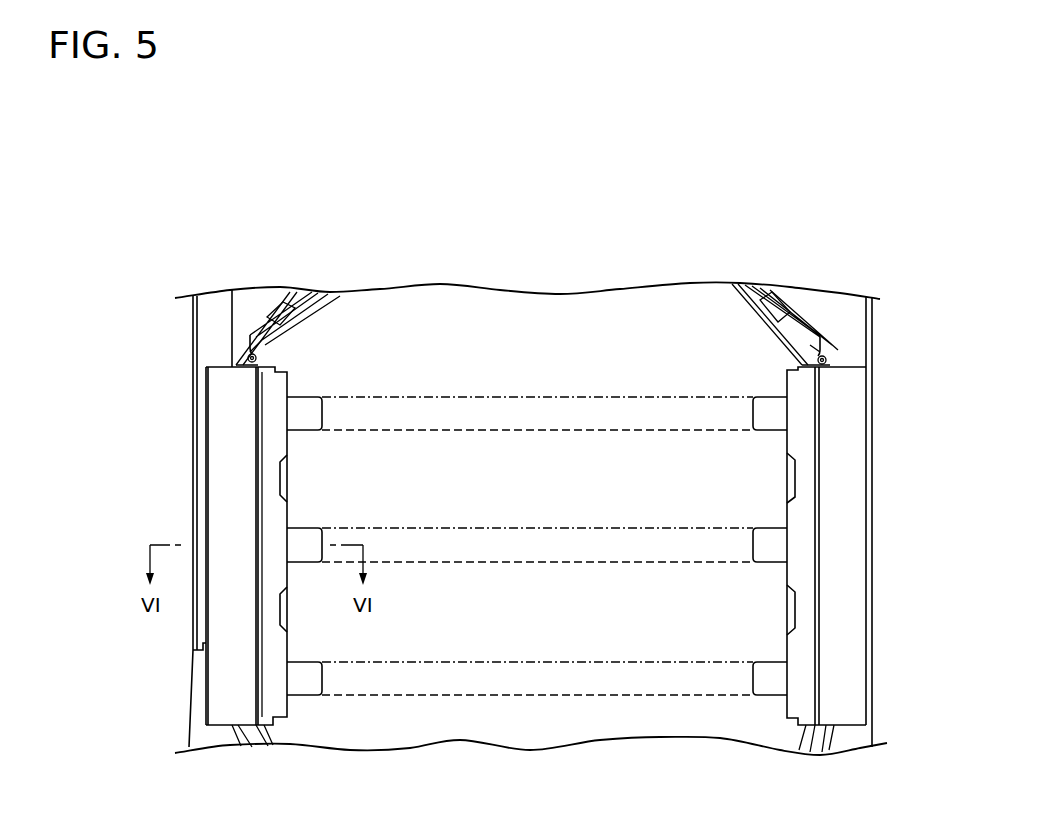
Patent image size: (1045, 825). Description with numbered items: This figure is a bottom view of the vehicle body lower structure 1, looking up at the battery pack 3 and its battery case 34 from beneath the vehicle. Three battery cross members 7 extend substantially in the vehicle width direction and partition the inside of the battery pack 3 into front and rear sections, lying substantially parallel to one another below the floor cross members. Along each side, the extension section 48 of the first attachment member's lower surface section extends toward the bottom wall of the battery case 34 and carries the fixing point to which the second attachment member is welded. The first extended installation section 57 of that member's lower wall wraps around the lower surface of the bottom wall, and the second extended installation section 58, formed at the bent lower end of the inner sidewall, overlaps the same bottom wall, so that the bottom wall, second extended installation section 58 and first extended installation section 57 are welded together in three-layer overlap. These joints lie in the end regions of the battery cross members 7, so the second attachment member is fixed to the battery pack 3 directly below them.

The vehicle body lower structure 1 is at (204, 243).
The battery pack 3 is at (537, 272).
The battery case 34 is at (668, 343).
The extension section 48 is at (227, 422).
The first extended installation section 57 is at (273, 392).
The second extended installation section 58 is at (307, 408).
The battery cross members 7 is at (722, 678).